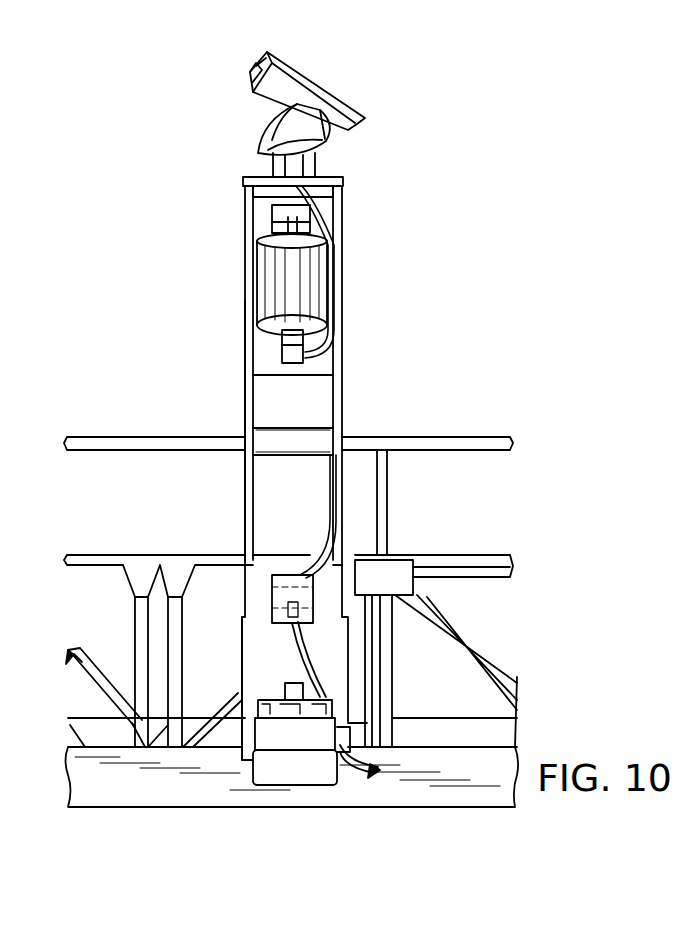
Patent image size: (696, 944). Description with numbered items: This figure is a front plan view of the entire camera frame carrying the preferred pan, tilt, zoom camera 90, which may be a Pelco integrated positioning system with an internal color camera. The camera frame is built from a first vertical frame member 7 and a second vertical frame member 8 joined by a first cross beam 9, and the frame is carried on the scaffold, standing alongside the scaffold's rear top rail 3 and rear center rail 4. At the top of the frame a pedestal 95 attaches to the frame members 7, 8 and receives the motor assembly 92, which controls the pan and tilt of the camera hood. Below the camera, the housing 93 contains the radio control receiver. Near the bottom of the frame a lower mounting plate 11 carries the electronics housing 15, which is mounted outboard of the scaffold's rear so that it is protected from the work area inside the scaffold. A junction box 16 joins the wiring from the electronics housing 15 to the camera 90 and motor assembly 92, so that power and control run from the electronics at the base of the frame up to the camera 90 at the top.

The pan, tilt, zoom camera 90 is at (358, 128).
The motor assembly 92 is at (308, 128).
The pedestal 95 is at (347, 177).
The housing 93 is at (288, 277).
The second vertical frame member 8 is at (342, 388).
The first vertical frame member 7 is at (245, 395).
The first cross beam 9 is at (320, 445).
The rear top rail 3 is at (445, 445).
The rear center rail 4 is at (478, 558).
The junction box 16 is at (302, 598).
The lower mounting plate 11 is at (282, 668).
The electronics housing 15 is at (297, 737).